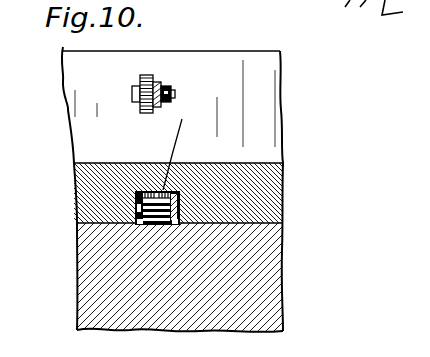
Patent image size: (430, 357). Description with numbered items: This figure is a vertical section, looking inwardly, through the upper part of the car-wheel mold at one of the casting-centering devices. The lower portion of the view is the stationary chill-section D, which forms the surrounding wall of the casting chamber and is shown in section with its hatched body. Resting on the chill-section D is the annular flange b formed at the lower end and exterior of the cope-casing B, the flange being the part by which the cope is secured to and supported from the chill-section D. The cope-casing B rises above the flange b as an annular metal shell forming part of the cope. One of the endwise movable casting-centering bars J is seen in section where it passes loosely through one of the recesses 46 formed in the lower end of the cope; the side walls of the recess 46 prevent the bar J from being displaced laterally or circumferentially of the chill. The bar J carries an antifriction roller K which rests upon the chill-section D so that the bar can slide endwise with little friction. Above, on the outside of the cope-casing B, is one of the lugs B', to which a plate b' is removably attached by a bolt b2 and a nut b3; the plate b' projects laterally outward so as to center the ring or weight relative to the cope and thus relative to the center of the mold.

The cope-casing B is at (172, 173).
The lugs B' is at (159, 64).
The plates b' is at (190, 60).
The bolts b2 is at (176, 93).
The nuts b3 is at (166, 108).
The annular flange b is at (188, 171).
The antifriction rollers K is at (180, 101).
The recesses 46 is at (147, 190).
The casting-centering bars J is at (133, 203).
The stationary chill-section D is at (265, 270).